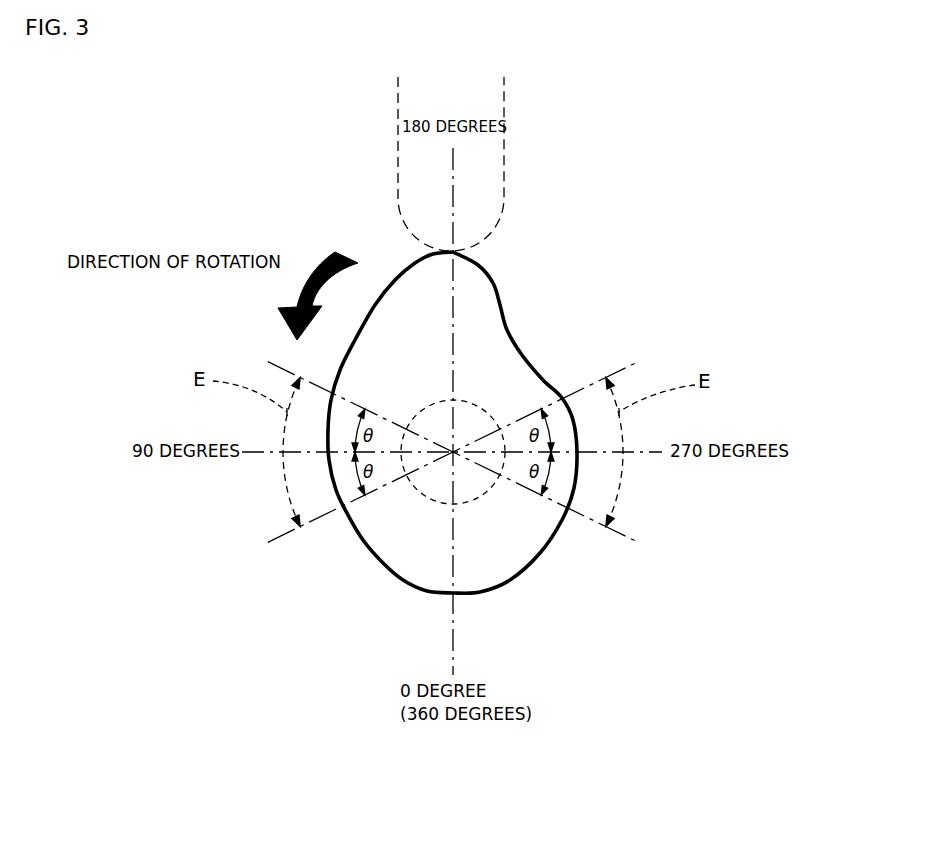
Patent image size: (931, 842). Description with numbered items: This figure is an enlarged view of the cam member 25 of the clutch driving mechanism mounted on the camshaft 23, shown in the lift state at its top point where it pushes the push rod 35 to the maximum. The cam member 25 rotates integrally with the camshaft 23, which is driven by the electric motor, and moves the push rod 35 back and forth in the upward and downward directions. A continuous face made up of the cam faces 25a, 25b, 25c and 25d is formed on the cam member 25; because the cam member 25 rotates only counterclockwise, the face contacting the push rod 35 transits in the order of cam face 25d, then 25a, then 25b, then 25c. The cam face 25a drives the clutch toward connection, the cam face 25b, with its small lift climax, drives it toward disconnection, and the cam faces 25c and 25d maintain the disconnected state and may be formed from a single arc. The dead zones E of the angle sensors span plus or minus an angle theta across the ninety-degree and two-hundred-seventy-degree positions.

The push rod 35 is at (504, 132).
The cam member 25 is at (482, 395).
The cam face 25a is at (388, 282).
The cam face 25b is at (508, 327).
The cam face 25c is at (537, 555).
The cam face 25d is at (363, 540).
The camshaft 23 is at (493, 413).